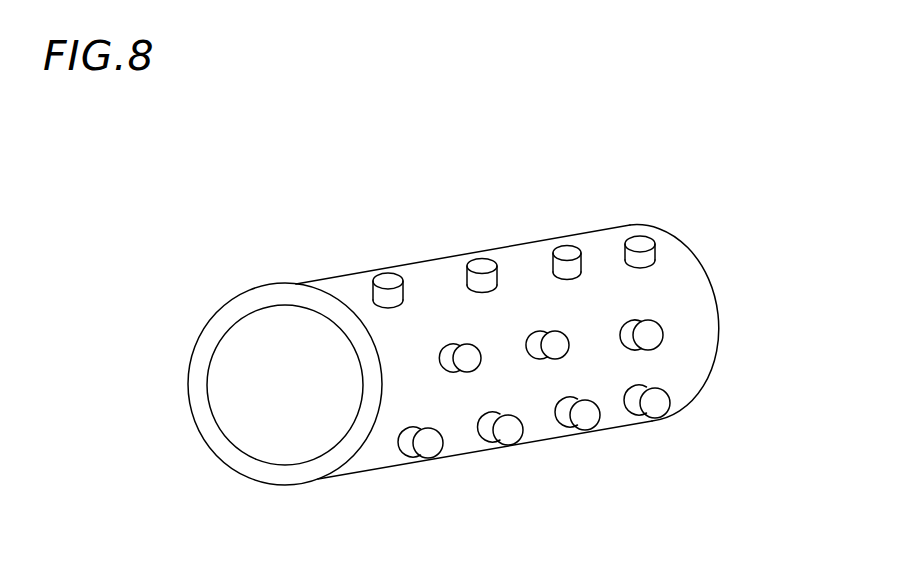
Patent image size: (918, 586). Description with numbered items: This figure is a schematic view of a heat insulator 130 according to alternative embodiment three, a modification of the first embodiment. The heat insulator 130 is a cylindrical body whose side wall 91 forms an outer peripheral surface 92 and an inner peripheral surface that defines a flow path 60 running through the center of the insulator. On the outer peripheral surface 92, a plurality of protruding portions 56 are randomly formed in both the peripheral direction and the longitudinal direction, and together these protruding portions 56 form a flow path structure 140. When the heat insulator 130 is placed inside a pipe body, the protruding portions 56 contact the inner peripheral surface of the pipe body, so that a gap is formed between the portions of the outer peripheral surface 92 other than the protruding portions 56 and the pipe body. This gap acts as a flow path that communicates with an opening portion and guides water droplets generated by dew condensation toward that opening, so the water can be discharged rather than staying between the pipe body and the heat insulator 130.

The heat insulator 130 is at (730, 252).
The flow path 60 is at (308, 398).
The side wall 91 is at (435, 307).
The protruding portion 56 is at (540, 243).
The flow path structure 140 is at (486, 264).
The outer peripheral surface 92 is at (655, 369).